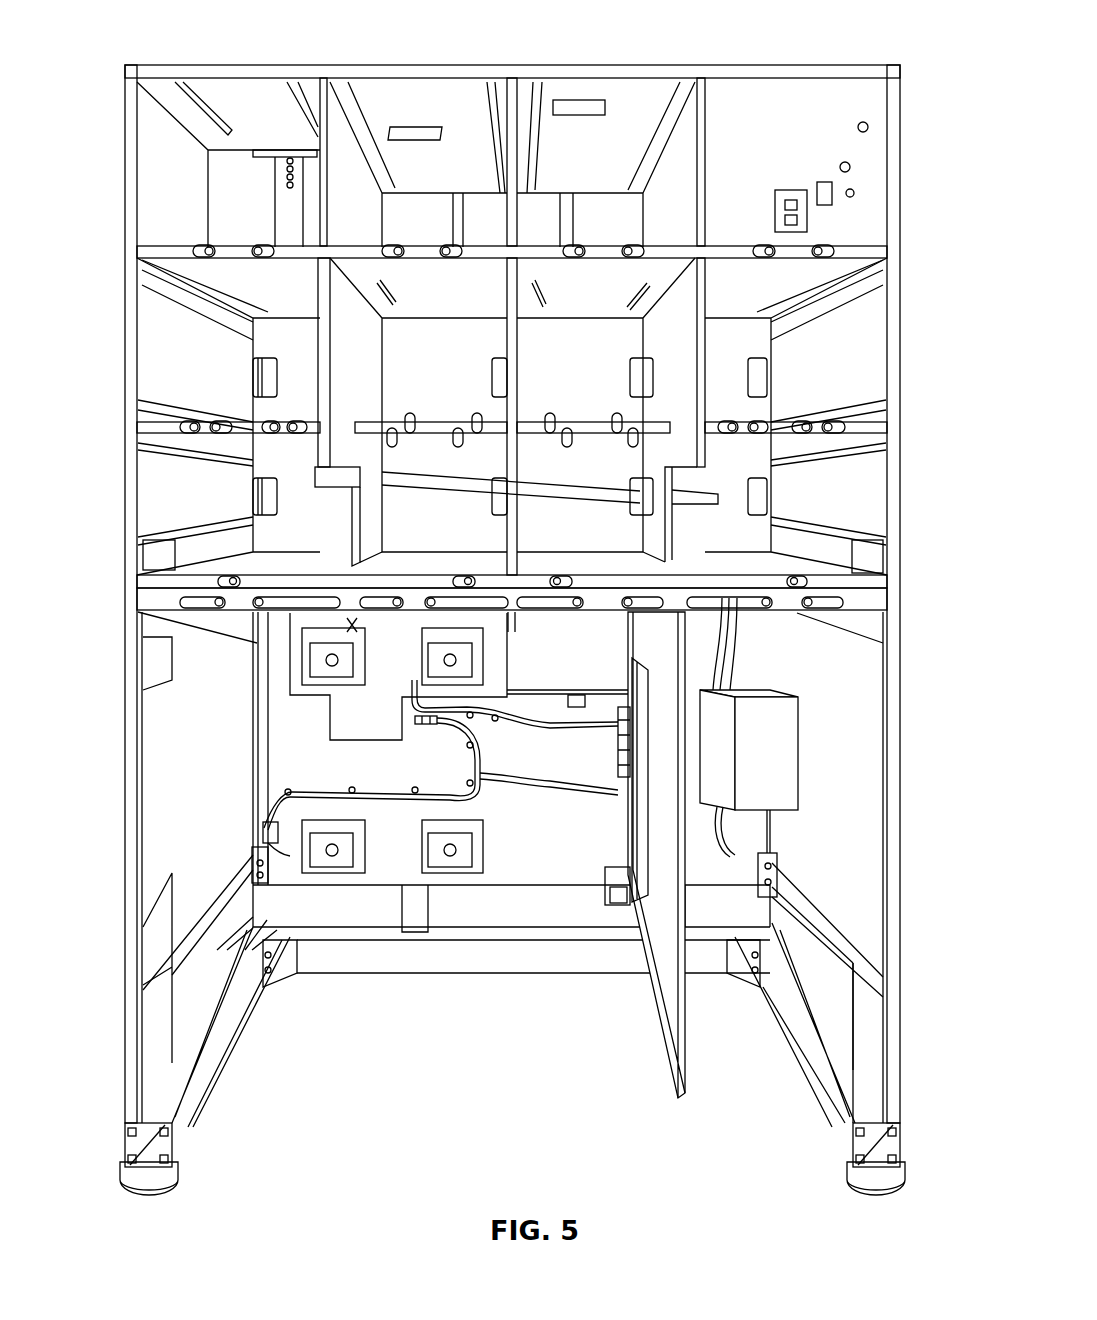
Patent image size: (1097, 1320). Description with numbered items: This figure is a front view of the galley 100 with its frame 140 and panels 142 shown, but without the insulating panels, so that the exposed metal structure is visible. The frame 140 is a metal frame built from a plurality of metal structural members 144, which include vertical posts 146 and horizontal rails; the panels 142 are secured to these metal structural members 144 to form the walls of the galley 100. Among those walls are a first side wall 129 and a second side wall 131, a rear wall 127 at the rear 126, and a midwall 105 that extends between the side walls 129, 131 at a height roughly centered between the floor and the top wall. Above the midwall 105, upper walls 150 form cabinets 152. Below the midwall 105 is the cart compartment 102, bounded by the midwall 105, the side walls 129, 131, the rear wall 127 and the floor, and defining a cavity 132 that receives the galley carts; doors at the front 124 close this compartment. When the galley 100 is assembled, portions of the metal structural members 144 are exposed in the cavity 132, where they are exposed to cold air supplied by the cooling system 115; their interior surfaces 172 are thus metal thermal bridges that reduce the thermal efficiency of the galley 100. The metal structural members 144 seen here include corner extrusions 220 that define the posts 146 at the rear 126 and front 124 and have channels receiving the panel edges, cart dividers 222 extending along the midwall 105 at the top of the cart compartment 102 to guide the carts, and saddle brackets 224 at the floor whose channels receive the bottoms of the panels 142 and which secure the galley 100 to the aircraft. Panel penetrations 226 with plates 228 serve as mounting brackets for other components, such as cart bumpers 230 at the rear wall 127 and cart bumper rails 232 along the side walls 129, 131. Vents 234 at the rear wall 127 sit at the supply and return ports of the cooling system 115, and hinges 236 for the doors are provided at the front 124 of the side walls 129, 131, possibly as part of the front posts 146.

The galley 100 is at (884, 62).
The cart compartment 102 is at (349, 1070).
The midwall 105 is at (876, 598).
The cooling system 115 is at (568, 867).
The front 124 is at (895, 1003).
The rear 126 is at (600, 905).
The rear wall 127 is at (746, 870).
The first side wall 129 is at (895, 735).
The second side wall 131 is at (134, 742).
The cavity 132 is at (838, 747).
The frame 140 is at (890, 1046).
The panels 142 is at (870, 915).
The metal structural members 144 is at (256, 623).
The posts 146 is at (134, 598).
The upper walls 150 is at (340, 167).
The cabinets 152 is at (462, 135).
The interior surfaces 172 is at (152, 928).
The corner extrusions 220 is at (250, 731).
The cart dividers 222 is at (348, 630).
The saddle brackets 224 is at (487, 910).
The panel penetrations 226 is at (282, 842).
The plates 228 is at (262, 835).
The cart bumpers 230 is at (253, 867).
The cart bumper rails 232 is at (192, 972).
The vents 234 is at (365, 852).
The hinges 236 is at (190, 1050).